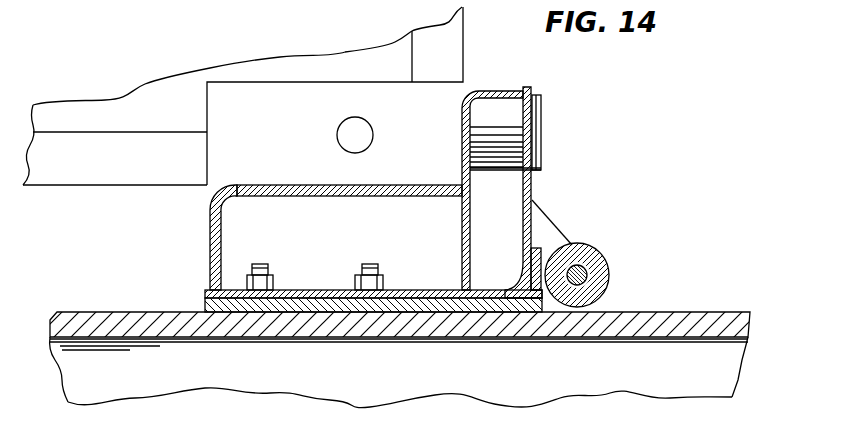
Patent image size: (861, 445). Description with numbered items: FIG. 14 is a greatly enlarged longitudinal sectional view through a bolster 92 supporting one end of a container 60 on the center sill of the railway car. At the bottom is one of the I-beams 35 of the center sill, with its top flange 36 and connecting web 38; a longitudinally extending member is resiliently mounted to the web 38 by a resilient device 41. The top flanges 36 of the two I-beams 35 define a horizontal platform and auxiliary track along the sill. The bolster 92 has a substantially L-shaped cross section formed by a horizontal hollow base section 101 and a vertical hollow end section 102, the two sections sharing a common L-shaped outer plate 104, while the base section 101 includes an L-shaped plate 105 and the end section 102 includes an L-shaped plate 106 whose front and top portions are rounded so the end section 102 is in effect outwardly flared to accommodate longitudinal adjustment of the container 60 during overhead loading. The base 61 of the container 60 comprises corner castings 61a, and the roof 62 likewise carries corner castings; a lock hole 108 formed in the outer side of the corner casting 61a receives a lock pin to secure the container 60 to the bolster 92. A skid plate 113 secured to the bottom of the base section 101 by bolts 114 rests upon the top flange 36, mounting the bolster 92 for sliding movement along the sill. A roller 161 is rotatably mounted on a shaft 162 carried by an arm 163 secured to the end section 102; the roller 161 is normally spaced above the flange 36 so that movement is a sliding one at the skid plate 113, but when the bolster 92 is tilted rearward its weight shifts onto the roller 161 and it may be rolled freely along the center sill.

The I-beam 35 is at (383, 385).
The top flange 36 is at (597, 333).
The web 38 is at (139, 373).
The resilient device 41 is at (403, 41).
The container 60 is at (140, 105).
The base 61 is at (100, 173).
The corner casting 61a is at (335, 96).
The roof 62 is at (67, 114).
The bolster 92 is at (272, 237).
The base section 101 is at (212, 252).
The end section 102 is at (532, 190).
The outer plate 104 is at (410, 292).
The plate 105 is at (341, 194).
The plate 106 is at (473, 212).
The lock hole 108 is at (372, 137).
The skid plate 113 is at (319, 300).
The bolt 114 is at (368, 268).
The roller 161 is at (609, 277).
The shaft 162 is at (586, 262).
The arm 163 is at (550, 228).